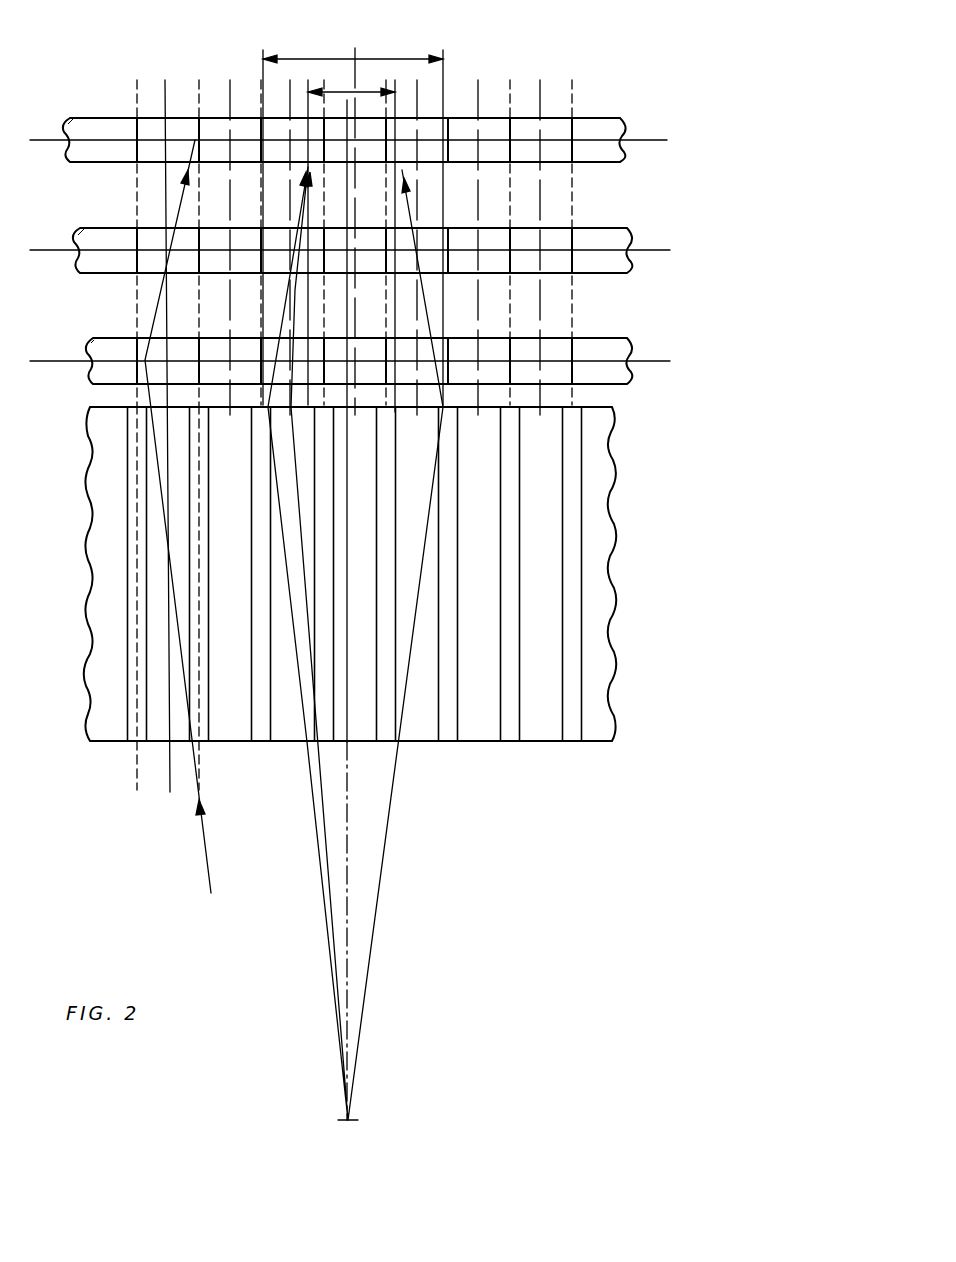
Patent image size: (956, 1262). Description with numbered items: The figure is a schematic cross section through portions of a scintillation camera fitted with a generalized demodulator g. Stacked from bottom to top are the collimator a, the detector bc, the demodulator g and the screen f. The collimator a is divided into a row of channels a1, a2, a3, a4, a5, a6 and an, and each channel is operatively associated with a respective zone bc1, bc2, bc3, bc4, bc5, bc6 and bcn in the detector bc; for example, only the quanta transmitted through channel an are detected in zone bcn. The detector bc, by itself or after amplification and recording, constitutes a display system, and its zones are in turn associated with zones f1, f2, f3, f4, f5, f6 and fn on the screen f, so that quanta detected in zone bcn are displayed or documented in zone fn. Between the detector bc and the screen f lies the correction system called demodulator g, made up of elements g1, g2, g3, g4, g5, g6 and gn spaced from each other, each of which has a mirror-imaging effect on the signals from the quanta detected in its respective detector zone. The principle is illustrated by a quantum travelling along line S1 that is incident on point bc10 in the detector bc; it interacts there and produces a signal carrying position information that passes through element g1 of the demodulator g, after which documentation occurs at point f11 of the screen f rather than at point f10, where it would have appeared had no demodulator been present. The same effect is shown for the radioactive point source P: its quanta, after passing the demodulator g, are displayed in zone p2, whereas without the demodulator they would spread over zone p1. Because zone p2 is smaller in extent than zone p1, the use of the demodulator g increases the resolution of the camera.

The screen f is at (621, 119).
The zone on screen f1 is at (151, 126).
The zone on screen f2 is at (224, 120).
The zone on screen f3 is at (277, 126).
The zone on screen f4 is at (366, 126).
The zone on screen f5 is at (428, 126).
The zone on screen f6 is at (474, 120).
The zone on screen fn is at (534, 120).
The point of screen f10 is at (139, 140).
The point of screen f11 is at (191, 136).
The demodulator g is at (626, 230).
The demodulator element g1 is at (164, 238).
The demodulator element g2 is at (217, 238).
The demodulator element g3 is at (286, 238).
The demodulator element g4 is at (372, 238).
The demodulator element g5 is at (434, 238).
The demodulator element g6 is at (482, 232).
The demodulator element gn is at (542, 232).
The detector bc is at (628, 338).
The zone in detector bc1 is at (188, 350).
The zone in detector bc2 is at (244, 350).
The zone in detector bc3 is at (314, 350).
The zone in detector bc4 is at (366, 350).
The zone in detector bc5 is at (410, 350).
The zone in detector bc6 is at (474, 350).
The zone in detector bcn is at (534, 350).
The point in detector bc10 is at (138, 357).
The collimator a is at (604, 562).
The collimator channel a1 is at (156, 744).
The collimator channel a2 is at (233, 744).
The collimator channel a3 is at (296, 744).
The collimator channel a4 is at (362, 744).
The collimator channel a5 is at (425, 744).
The collimator channel a6 is at (488, 744).
The collimator channel an is at (546, 744).
The line of incident quanta S1 is at (189, 516).
The radioactive point source P is at (349, 1122).
The zone on screen without demodulator p1 is at (353, 220).
The zone on screen with demodulator p2 is at (351, 239).